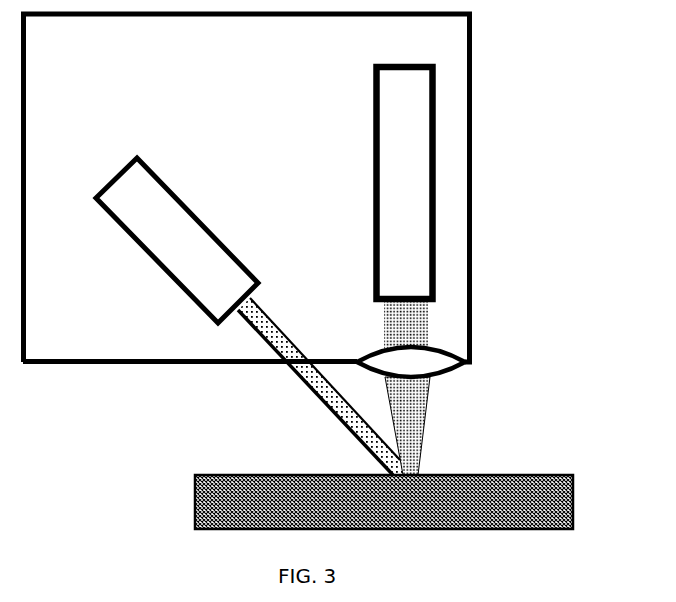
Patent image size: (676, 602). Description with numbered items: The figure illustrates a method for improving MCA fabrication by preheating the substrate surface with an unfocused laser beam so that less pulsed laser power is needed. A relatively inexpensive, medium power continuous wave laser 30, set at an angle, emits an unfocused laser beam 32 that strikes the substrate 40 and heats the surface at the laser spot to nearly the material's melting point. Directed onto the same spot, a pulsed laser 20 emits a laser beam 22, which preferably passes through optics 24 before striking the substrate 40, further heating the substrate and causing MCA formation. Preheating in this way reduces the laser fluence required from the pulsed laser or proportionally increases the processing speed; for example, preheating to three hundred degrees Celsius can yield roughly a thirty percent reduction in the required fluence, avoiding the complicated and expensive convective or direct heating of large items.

The pulsed laser 20 is at (403, 153).
The laser beam 22 is at (393, 328).
The optics 24 is at (427, 363).
The continuous wave laser 30 is at (153, 225).
The unfocused laser beam 32 is at (312, 382).
The substrate 40 is at (530, 475).